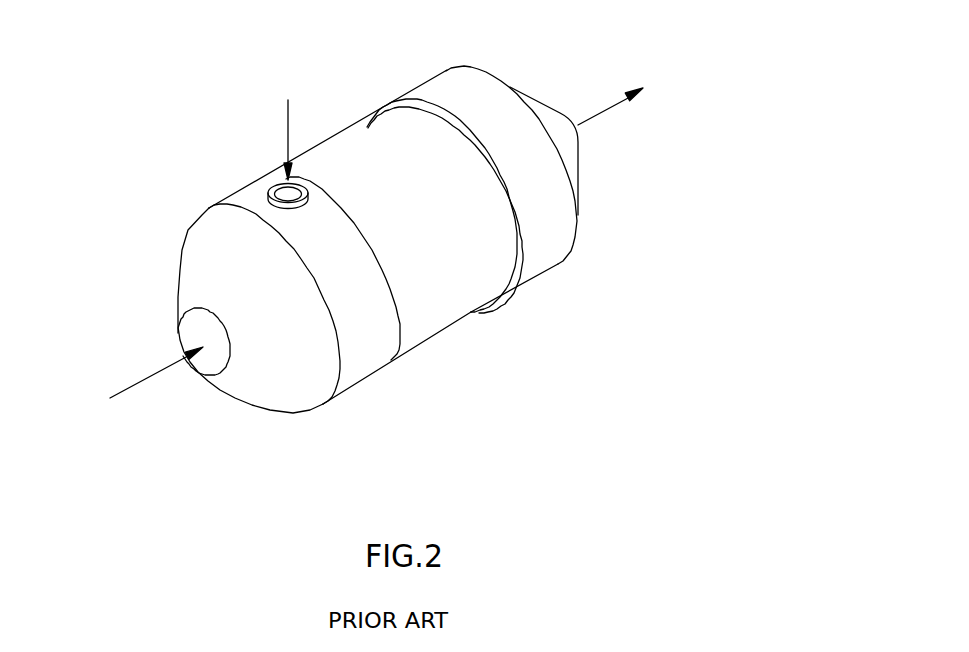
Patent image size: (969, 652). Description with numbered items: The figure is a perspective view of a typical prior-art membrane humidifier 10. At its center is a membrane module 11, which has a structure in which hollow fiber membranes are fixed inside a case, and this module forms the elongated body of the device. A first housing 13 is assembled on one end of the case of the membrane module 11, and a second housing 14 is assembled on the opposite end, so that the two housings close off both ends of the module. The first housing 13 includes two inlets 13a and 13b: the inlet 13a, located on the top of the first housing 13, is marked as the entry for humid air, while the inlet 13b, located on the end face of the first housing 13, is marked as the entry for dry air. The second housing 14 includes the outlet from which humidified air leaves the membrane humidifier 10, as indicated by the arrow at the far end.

The membrane humidifier 10 is at (287, 433).
The membrane module 11 is at (435, 308).
The first housing 13 is at (191, 262).
The inlet 13a is at (284, 191).
The inlet 13b is at (192, 330).
The second housing 14 is at (542, 260).